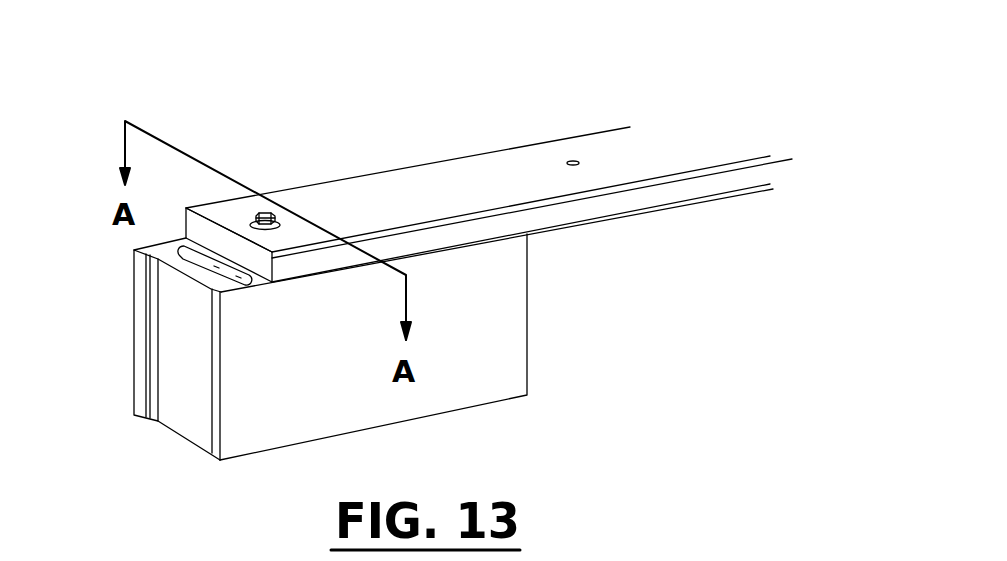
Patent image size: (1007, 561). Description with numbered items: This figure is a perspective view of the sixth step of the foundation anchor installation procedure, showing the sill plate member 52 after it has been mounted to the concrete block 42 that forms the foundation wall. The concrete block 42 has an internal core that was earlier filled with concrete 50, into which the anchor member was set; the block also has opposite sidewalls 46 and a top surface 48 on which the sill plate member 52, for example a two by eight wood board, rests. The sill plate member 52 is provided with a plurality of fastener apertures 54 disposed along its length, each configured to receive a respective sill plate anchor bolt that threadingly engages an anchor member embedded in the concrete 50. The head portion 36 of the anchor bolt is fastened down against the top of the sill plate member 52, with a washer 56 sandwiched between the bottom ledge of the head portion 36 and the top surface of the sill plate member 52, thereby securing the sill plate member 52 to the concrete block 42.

The head portion 36 is at (262, 212).
The concrete block 42 is at (405, 317).
The sidewalls 46 is at (495, 290).
The top surface 48 is at (157, 244).
The concrete 50 is at (195, 254).
The sill plate member 52 is at (413, 185).
The fastener apertures 54 is at (573, 160).
The washer 56 is at (281, 226).